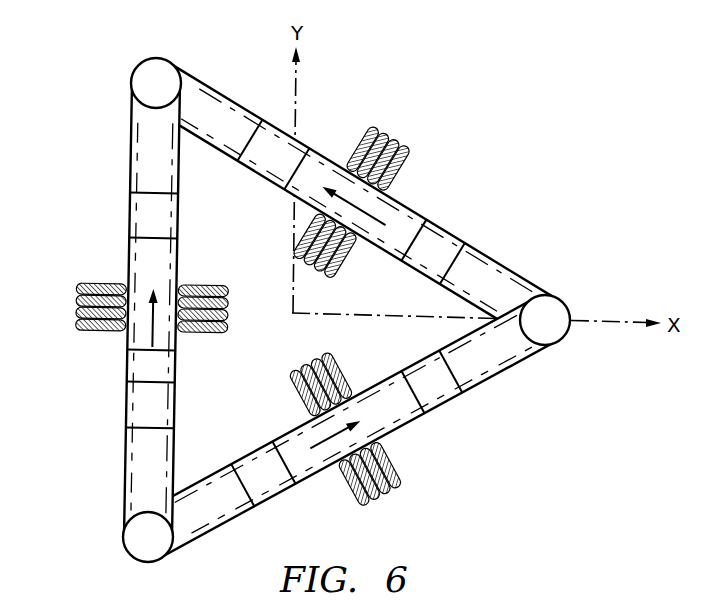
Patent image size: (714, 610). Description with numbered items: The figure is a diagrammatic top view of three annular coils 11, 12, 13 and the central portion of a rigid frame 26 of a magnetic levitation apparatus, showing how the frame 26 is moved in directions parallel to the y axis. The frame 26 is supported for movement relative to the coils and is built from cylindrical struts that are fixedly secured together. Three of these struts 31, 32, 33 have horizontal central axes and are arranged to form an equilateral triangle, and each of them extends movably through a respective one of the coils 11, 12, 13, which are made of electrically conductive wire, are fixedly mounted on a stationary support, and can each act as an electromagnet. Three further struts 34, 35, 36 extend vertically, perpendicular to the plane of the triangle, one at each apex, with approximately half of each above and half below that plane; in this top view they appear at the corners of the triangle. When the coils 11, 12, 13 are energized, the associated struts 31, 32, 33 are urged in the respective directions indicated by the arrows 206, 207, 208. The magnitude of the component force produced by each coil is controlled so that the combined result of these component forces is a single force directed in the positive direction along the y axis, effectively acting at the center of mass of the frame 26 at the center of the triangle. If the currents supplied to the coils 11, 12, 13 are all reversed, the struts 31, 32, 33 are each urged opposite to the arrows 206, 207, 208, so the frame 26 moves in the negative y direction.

The annular coil 11 is at (78, 300).
The annular coil 12 is at (385, 497).
The annular coil 13 is at (386, 134).
The rigid frame 26 is at (310, 311).
The cylindrical strut 31 is at (129, 263).
The cylindrical strut 32 is at (400, 428).
The cylindrical strut 33 is at (314, 151).
The cylindrical strut 34 is at (136, 84).
The cylindrical strut 35 is at (128, 537).
The cylindrical strut 36 is at (567, 312).
The arrow 206 is at (151, 342).
The arrow 207 is at (316, 440).
The arrow 208 is at (381, 213).